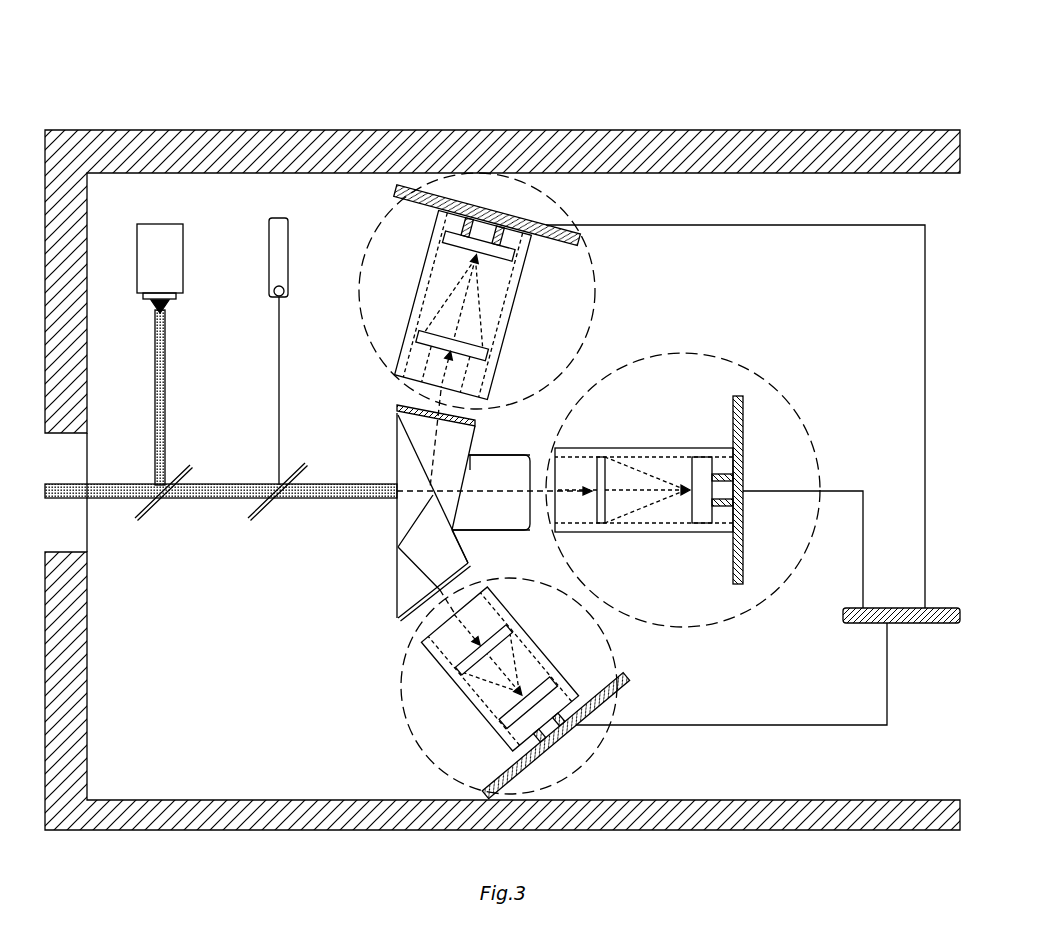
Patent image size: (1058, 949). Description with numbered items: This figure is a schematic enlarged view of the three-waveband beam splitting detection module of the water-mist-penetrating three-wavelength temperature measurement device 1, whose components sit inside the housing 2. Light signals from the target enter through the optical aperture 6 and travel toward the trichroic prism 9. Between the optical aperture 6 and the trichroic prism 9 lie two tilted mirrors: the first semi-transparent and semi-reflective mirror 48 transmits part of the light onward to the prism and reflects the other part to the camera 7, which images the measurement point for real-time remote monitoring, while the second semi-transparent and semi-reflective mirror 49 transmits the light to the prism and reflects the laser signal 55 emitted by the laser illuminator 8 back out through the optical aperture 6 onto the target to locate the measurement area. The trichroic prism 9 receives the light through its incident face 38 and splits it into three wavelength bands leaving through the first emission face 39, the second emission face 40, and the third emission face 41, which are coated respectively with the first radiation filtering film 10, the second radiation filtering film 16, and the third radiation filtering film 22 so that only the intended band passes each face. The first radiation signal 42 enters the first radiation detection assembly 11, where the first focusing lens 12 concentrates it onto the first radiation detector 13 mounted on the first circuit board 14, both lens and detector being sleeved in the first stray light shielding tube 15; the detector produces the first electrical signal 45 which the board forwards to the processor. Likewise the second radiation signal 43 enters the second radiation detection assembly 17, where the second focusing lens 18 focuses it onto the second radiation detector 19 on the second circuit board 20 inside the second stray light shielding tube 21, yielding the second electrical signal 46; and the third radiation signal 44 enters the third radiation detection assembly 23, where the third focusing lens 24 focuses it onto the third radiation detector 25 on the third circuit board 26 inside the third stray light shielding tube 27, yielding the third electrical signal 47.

The water-mist-penetrating three-wavelength temperature measurement device 1 is at (493, 114).
The housing 2 is at (777, 130).
The optical aperture 6 is at (67, 462).
The camera 7 is at (183, 262).
The laser illuminator 8 is at (288, 262).
The trichroic prism 9 is at (410, 598).
The first radiation filtering film 10 is at (397, 405).
The first radiation detection assembly 11 is at (362, 336).
The first focusing lens 12 is at (487, 357).
The first radiation detector 13 is at (512, 252).
The first circuit board 14 is at (427, 212).
The first stray light shielding tube 15 is at (418, 290).
The second radiation filtering film 16 is at (529, 531).
The second radiation detection assembly 17 is at (632, 356).
The second focusing lens 18 is at (605, 467).
The second radiation detector 19 is at (700, 525).
The second circuit board 20 is at (733, 418).
The second stray light shielding tube 21 is at (640, 533).
The third radiation filtering film 22 is at (422, 644).
The third radiation detection assembly 23 is at (402, 695).
The third focusing lens 24 is at (508, 640).
The third radiation detector 25 is at (505, 741).
The third circuit board 26 is at (614, 683).
The third stray light shielding tube 27 is at (476, 706).
The incident face 38 is at (397, 460).
The first emission face 39 is at (476, 426).
The second emission face 40 is at (530, 455).
The third emission face 41 is at (480, 576).
The first radiation signal 42 is at (430, 462).
The second radiation signal 43 is at (455, 532).
The third radiation signal 44 is at (408, 578).
The first electrical signal 45 is at (925, 388).
The second electrical signal 46 is at (863, 516).
The third electrical signal 47 is at (887, 692).
The first semi-transparent and semi-reflective mirror 48 is at (138, 520).
The second semi-transparent and semi-reflective mirror 49 is at (268, 520).
The laser signal 55 is at (279, 412).